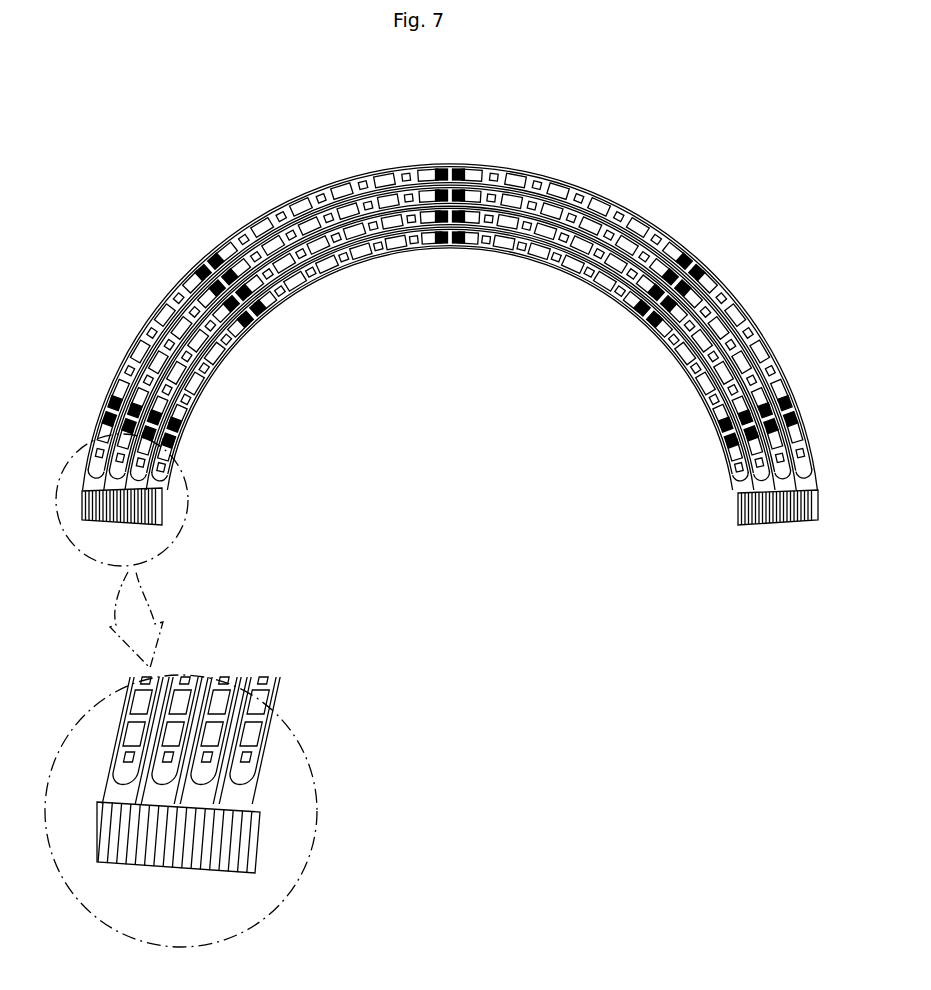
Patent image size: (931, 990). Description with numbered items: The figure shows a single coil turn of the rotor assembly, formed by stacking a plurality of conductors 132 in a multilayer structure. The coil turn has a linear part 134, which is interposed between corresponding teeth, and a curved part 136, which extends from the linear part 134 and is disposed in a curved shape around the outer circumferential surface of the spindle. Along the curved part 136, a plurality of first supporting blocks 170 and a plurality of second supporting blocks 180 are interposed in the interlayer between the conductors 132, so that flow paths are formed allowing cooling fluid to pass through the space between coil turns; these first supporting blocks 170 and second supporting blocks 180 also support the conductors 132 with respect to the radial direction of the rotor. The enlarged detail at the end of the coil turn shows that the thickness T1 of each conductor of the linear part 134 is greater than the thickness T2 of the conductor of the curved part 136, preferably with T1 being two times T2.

The curved part 136 is at (440, 298).
The first supporting blocks 170 is at (400, 168).
The second supporting blocks 180 is at (458, 165).
The conductors 132 is at (122, 858).
The linear part 134 is at (93, 802).
The thickness of each conductor of the linear part T1 is at (207, 855).
The thickness of the conductor of the curved part T2 is at (254, 738).